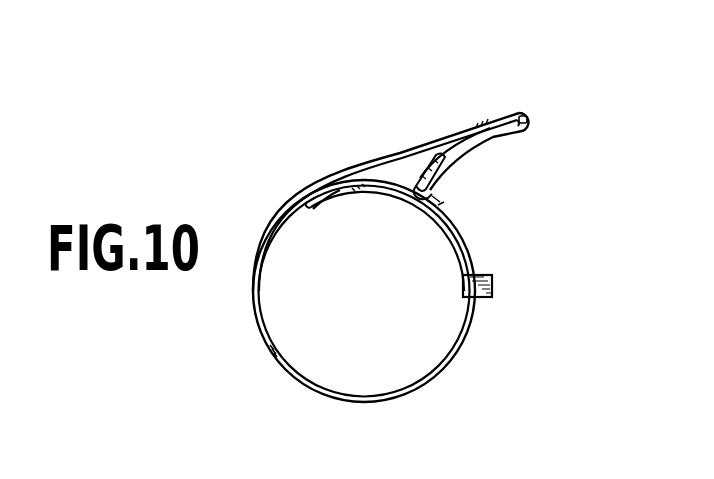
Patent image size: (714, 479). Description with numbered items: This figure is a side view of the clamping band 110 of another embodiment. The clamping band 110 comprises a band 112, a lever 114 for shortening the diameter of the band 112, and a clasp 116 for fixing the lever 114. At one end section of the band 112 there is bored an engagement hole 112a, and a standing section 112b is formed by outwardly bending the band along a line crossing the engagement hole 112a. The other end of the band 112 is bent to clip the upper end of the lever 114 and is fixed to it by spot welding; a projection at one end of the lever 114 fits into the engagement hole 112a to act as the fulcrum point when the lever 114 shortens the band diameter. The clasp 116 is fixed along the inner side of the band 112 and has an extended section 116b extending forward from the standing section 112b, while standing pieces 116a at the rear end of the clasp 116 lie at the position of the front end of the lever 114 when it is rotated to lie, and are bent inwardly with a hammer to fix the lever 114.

The clamping band 110 is at (498, 80).
The band 112 is at (435, 370).
The engagement hole 112a is at (418, 190).
The standing section 112b is at (428, 175).
The lever 114 is at (478, 140).
The clasp 116 is at (437, 208).
The standing pieces 116a is at (491, 276).
The extended section 116b is at (328, 204).